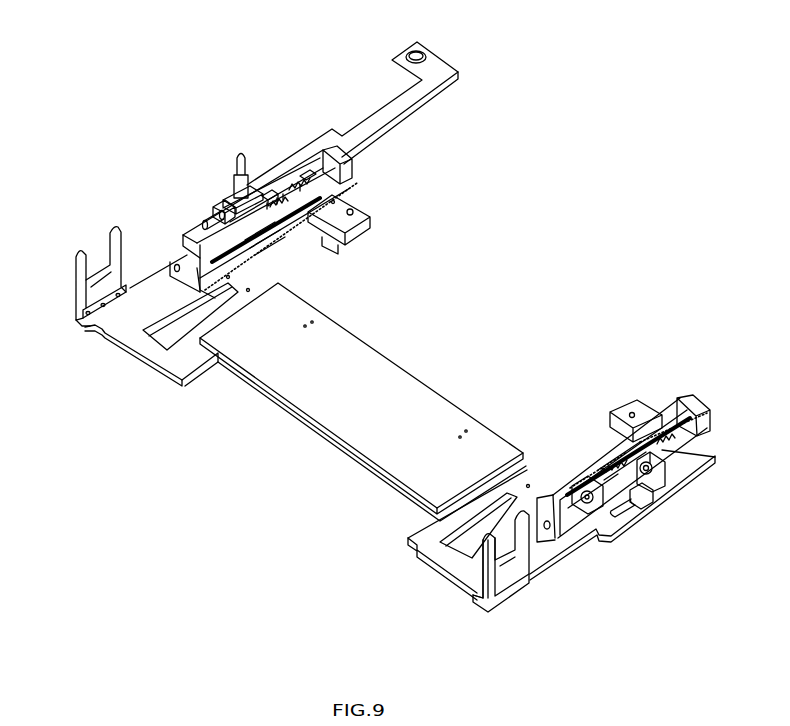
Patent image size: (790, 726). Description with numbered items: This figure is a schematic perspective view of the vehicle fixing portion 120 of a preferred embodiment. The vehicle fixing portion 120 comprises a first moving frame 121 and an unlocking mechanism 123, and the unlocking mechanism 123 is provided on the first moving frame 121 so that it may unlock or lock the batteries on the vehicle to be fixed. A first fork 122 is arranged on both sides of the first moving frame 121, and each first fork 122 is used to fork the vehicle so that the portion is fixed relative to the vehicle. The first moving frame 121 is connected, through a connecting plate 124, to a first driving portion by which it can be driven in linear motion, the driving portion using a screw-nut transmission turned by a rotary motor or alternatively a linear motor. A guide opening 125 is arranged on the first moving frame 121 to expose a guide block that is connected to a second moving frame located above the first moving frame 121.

The vehicle fixing portion 120 is at (513, 237).
The first moving frame 121 is at (395, 99).
The first fork 122 is at (76, 252).
The unlocking mechanism 123 is at (250, 183).
The connecting plate 124 is at (388, 411).
The guide opening 125 is at (178, 325).